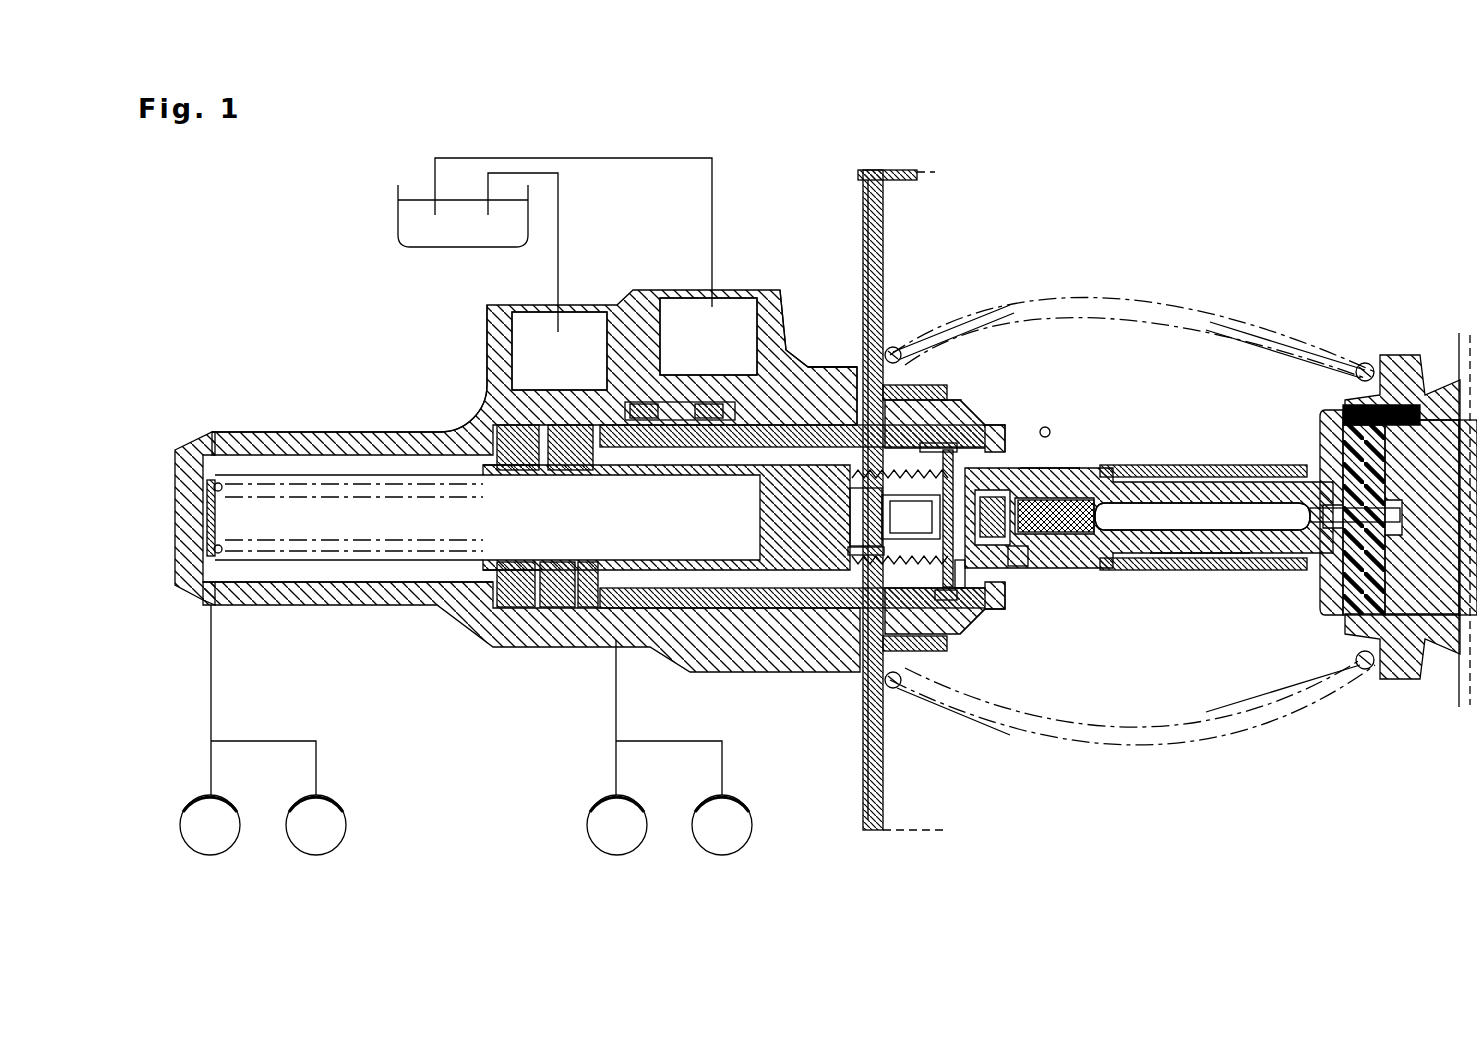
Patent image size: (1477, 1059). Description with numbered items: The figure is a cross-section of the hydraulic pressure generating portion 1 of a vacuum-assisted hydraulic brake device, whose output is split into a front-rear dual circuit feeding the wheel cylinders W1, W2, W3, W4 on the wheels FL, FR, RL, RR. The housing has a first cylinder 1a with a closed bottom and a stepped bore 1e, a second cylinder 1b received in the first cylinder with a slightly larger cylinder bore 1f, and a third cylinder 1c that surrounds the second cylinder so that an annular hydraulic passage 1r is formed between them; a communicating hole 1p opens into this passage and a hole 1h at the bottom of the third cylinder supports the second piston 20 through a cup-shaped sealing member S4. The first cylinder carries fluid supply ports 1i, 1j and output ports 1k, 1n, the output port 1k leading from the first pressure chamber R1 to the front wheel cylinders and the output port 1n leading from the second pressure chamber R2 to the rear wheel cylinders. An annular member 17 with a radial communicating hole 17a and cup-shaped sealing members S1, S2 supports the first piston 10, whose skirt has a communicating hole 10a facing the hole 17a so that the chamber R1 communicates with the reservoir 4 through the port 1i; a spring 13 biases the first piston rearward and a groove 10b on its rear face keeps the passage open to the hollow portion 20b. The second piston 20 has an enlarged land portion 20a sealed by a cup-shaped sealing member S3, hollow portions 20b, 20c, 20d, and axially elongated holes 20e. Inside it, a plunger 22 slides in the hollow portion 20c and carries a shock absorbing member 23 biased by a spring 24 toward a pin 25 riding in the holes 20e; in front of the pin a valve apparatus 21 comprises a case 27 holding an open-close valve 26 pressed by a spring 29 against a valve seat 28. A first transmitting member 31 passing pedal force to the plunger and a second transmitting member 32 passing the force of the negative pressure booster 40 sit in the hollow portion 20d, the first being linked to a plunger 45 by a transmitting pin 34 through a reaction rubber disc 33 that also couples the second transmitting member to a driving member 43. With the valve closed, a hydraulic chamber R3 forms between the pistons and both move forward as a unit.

The hydraulic pressure generating portion 1 is at (306, 410).
The first cylinder 1a is at (276, 436).
The second cylinder 1b is at (612, 330).
The third cylinder 1c is at (822, 428).
The stepped bore 1e is at (407, 584).
The cylinder bore 1f is at (772, 610).
The hole 1h is at (1017, 562).
The fluid supply port 1i is at (488, 308).
The fluid supply port 1j is at (668, 385).
The output port 1k is at (238, 608).
The output port 1n is at (617, 652).
The communicating hole 1p is at (977, 410).
The annular hydraulic passage 1r is at (758, 372).
The reservoir 4 is at (398, 216).
The first piston 10 is at (805, 575).
The communicating hole 10a is at (440, 437).
The groove 10b is at (845, 375).
The spring 13 is at (482, 548).
The annular member 17 is at (555, 612).
The communicating hole 17a is at (530, 430).
The cup-shaped sealing member S1 is at (500, 612).
The cup-shaped sealing member S2 is at (588, 612).
The cup-shaped sealing member S3 is at (915, 440).
The cup-shaped sealing member S4 is at (990, 560).
The first pressure chamber R1 is at (338, 572).
The second pressure chamber R2 is at (727, 632).
The hydraulic chamber R3 is at (985, 420).
The second piston 20 is at (1077, 562).
The land portion 20a is at (950, 400).
The hollow portion 20b is at (1050, 466).
The hollow portion 20c is at (1100, 470).
The hollow portion 20d is at (1215, 548).
The axially elongated holes 20e is at (947, 600).
The valve apparatus 21 is at (860, 580).
The plunger 22 is at (1090, 545).
The shock absorbing member 23 is at (1020, 562).
The spring 24 is at (1048, 428).
The pin 25 is at (945, 602).
The open-close valve 26 is at (985, 600).
The case 27 is at (940, 602).
The valve seat 28 is at (940, 600).
The spring 29 is at (905, 362).
The first transmitting member 31 is at (1213, 515).
The second transmitting member 32 is at (1333, 453).
The reaction rubber disc 33 is at (1355, 652).
The transmitting pin 34 is at (1330, 500).
The negative pressure booster 40 is at (1385, 692).
The driving member 43 is at (1437, 617).
The plunger 45 is at (1425, 400).
The wheel cylinder W1 is at (223, 795).
The wheel cylinder W2 is at (330, 795).
The wheel cylinder W3 is at (604, 790).
The wheel cylinder W4 is at (750, 777).
The front left wheel FL is at (210, 825).
The front right wheel FR is at (315, 825).
The rear left wheel RL is at (617, 825).
The rear right wheel RR is at (722, 825).